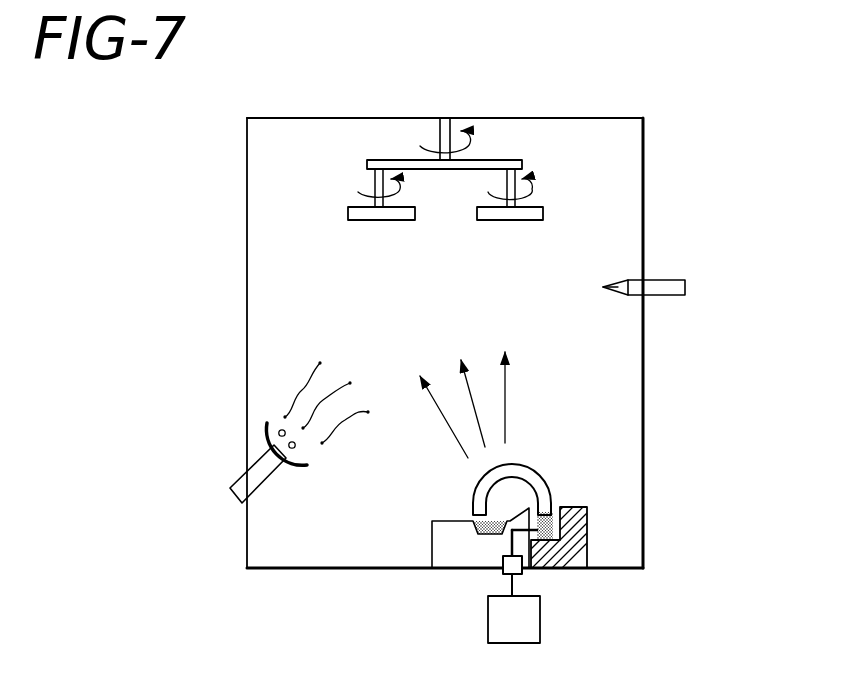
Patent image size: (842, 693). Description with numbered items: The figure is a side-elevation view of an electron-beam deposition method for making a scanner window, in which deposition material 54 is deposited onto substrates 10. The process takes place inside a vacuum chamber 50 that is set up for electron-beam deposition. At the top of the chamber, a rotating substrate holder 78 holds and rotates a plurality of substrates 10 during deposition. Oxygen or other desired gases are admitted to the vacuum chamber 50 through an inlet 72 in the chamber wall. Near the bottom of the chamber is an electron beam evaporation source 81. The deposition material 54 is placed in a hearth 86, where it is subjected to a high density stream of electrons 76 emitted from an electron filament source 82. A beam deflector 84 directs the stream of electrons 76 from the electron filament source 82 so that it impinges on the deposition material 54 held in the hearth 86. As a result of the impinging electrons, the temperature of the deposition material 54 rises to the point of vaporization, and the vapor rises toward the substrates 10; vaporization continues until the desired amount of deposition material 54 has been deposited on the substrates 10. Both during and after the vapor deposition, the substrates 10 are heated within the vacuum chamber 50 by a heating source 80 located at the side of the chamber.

The vacuum chamber 50 is at (583, 112).
The rotating substrate holder 78 is at (451, 126).
The substrate 10 is at (383, 220).
The inlet 72 is at (700, 287).
The heating source 80 is at (267, 427).
The stream of electrons 76 is at (525, 473).
The hearth 86 is at (437, 545).
The deposition material 54 is at (493, 533).
The beam deflector 84 is at (605, 518).
The electron beam evaporation source 81 is at (570, 576).
The electron filament source 82 is at (528, 618).